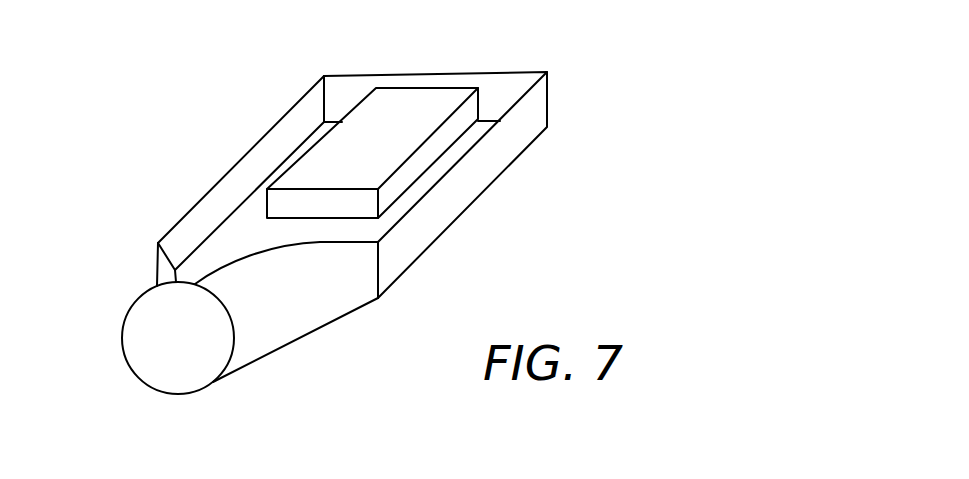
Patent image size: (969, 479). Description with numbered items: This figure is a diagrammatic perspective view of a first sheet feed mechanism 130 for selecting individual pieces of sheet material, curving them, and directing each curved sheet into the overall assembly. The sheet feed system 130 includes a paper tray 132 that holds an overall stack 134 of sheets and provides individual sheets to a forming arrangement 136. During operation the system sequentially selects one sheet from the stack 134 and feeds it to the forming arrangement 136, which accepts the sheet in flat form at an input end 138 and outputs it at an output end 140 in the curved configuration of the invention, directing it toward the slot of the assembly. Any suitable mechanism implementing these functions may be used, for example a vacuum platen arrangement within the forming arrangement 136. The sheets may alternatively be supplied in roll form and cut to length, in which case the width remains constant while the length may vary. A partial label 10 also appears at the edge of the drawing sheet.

The sensor assembly 130 is at (230, 112).
The housing body 132 is at (548, 103).
The sensor block 134 is at (442, 95).
The lower surface 136 is at (328, 328).
The front ledge 138 is at (365, 248).
The cylindrical member 140 is at (121, 331).
The apparatus 10 is at (776, 478).